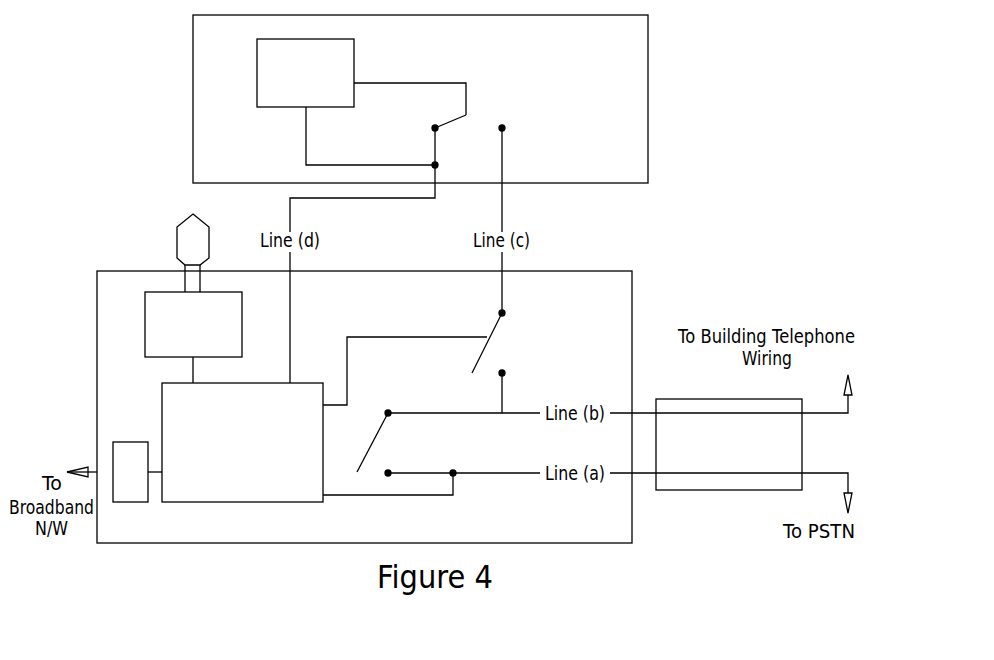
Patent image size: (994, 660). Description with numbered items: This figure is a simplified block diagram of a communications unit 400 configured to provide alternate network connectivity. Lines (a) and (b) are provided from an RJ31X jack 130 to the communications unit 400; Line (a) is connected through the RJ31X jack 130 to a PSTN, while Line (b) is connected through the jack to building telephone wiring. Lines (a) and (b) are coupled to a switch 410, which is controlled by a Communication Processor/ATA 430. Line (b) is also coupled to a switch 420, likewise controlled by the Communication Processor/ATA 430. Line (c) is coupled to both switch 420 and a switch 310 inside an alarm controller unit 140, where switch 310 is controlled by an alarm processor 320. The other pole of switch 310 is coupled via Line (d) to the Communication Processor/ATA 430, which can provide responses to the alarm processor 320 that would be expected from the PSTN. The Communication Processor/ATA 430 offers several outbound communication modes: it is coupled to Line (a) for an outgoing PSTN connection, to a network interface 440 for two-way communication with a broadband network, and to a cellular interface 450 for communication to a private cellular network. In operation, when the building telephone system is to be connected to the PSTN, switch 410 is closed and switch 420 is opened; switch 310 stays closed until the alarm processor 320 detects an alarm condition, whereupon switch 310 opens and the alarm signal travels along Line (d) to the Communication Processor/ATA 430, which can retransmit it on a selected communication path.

The alarm controller unit 140 is at (420, 99).
The alarm processor 320 is at (326, 98).
The switch 310 is at (483, 123).
The communications unit 400 is at (617, 531).
The cellular interface 450 is at (212, 347).
The Communication Processor/ATA 430 is at (263, 486).
The network interface 440 is at (131, 495).
The switch 420 is at (497, 353).
The switch 410 is at (382, 460).
The RJ31X jack 130 is at (778, 457).